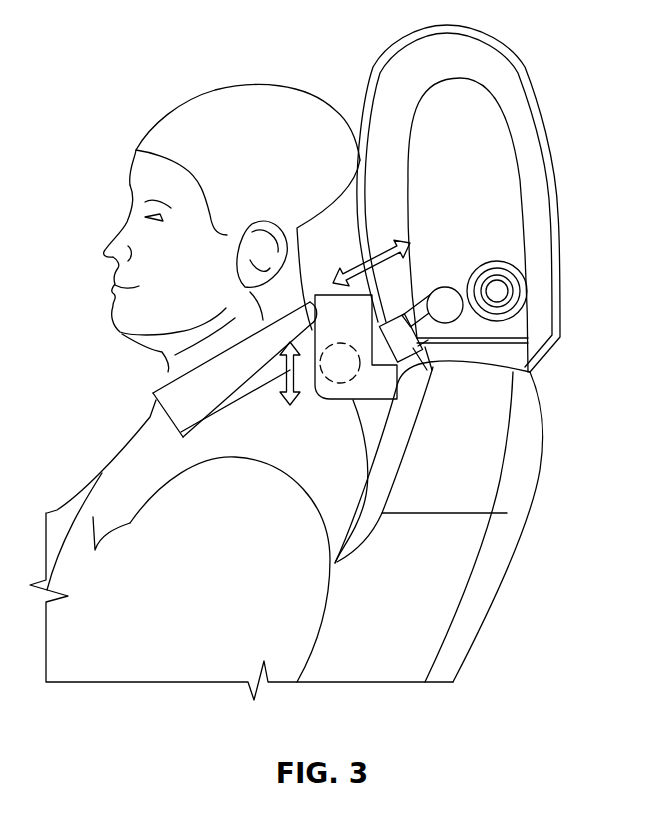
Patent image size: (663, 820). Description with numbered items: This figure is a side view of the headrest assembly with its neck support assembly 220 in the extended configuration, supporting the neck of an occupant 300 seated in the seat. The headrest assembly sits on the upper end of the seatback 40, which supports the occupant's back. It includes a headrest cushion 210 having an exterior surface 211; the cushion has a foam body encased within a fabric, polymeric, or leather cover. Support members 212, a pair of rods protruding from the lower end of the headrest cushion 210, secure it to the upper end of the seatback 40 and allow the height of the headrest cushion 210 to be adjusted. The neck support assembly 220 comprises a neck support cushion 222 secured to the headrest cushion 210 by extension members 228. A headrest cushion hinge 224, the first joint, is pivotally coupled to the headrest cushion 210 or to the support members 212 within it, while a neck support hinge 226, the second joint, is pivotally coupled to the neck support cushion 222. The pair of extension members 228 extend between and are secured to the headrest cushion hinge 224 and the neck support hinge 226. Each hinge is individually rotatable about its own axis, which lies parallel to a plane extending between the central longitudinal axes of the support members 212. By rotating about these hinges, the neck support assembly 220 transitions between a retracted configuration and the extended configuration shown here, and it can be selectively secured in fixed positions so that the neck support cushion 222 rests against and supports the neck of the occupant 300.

The occupant 300 is at (228, 84).
The headrest cushion 210 is at (522, 60).
The support members 212 is at (387, 48).
The exterior surface 211 is at (500, 145).
The neck support assembly 220 is at (331, 403).
The neck support cushion 222 is at (162, 360).
The headrest cushion hinge 224 is at (447, 287).
The neck support hinge 226 is at (343, 383).
The extension members 228 is at (455, 365).
The seatback 40 is at (527, 520).